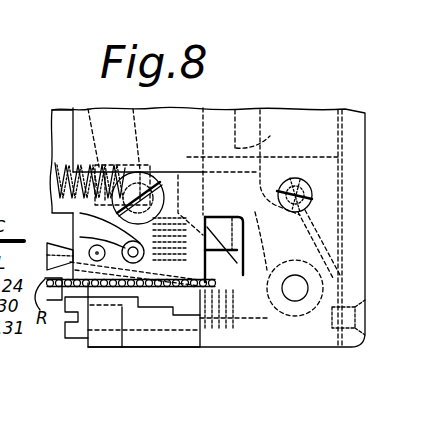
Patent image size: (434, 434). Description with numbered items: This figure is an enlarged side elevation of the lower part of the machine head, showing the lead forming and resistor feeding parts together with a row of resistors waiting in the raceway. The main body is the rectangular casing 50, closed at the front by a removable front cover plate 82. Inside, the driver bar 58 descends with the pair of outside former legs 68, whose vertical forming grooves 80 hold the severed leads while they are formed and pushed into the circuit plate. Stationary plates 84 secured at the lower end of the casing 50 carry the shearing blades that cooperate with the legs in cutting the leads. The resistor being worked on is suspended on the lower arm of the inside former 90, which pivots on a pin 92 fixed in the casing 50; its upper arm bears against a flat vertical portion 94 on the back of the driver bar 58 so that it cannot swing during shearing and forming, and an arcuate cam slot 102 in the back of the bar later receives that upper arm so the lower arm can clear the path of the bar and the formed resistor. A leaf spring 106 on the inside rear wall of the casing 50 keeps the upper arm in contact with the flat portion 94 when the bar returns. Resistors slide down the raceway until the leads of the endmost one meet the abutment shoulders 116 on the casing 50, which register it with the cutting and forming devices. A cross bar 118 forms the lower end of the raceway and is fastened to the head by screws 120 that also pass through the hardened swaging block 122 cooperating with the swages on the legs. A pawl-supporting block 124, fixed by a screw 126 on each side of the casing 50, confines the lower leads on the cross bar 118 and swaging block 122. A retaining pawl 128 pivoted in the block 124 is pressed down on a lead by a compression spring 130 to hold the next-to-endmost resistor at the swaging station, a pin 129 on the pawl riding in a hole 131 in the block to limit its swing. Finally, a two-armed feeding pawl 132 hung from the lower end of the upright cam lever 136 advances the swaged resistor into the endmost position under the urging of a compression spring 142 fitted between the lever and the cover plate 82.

The casing 50 is at (368, 124).
The driver bar 58 is at (200, 116).
The outside former legs 68 is at (266, 135).
The forming grooves 80 is at (222, 217).
The front cover plate 82 is at (55, 112).
The stationary plates 84 is at (305, 157).
The inside former 90 is at (268, 317).
The pin 92 is at (295, 301).
The flat vertical portion 94 is at (262, 170).
The cam slot 102 is at (246, 121).
The leaf spring 106 is at (320, 236).
The abutment shoulders 116 is at (205, 292).
The cross bar 118 is at (103, 350).
The screws 120 is at (62, 328).
The swaging block 122 is at (138, 350).
The pawl-supporting block 124 is at (147, 170).
The screw 126 is at (163, 173).
The retaining pawl 128 is at (56, 258).
The pin 129 is at (80, 238).
The compression spring 130 is at (215, 236).
The hole 131 is at (73, 212).
The feeding pawl 132 is at (207, 265).
The cam lever 136 is at (88, 120).
The compression spring 142 is at (62, 163).